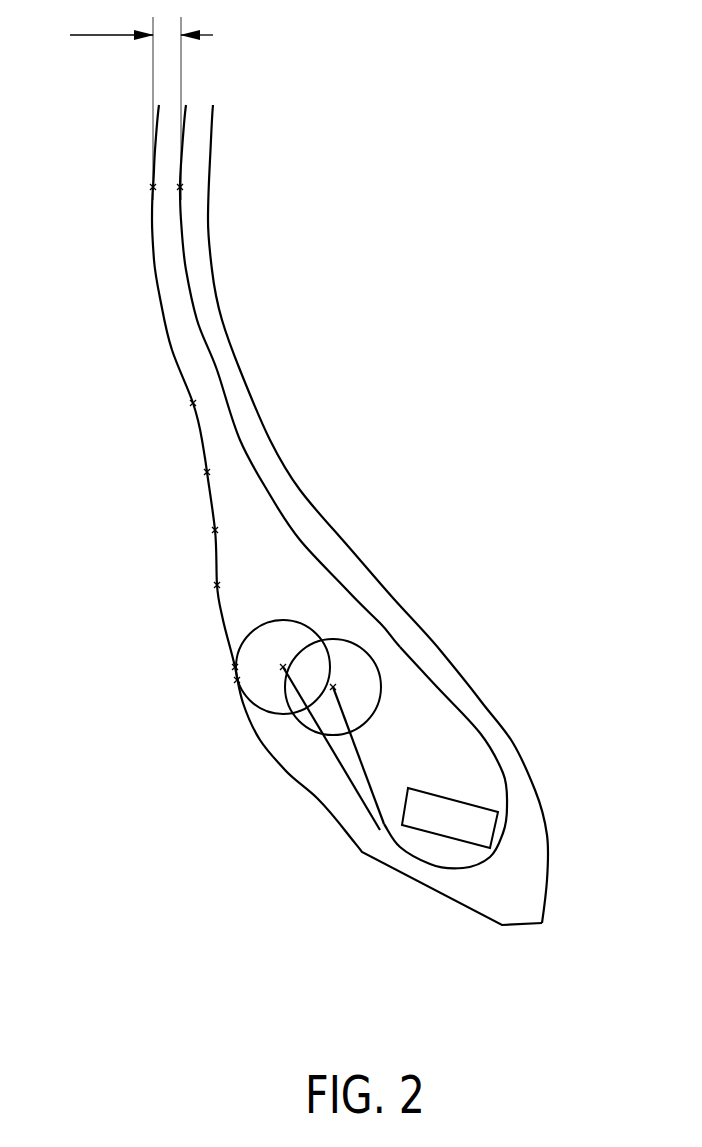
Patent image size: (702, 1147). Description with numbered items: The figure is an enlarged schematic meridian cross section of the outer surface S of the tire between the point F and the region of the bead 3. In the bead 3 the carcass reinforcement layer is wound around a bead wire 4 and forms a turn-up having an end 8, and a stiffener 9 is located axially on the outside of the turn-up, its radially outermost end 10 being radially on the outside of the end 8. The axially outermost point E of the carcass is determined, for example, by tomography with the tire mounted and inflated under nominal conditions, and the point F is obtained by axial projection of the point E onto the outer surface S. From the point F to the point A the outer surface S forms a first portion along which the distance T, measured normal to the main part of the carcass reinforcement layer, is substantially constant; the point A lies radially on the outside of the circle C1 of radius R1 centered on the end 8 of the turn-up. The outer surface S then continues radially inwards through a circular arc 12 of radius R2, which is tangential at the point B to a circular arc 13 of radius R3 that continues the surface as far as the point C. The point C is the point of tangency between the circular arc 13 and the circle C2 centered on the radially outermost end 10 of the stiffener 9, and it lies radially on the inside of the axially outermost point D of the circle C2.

The distance T is at (141, 103).
The point F is at (153, 187).
The axially outermost point of the carcass E is at (181, 187).
The outer surface of the tire S is at (160, 298).
The point A is at (193, 403).
The circular arc 12 is at (207, 472).
The point B is at (215, 530).
The circular arc 13 is at (217, 585).
The axially outermost point of the circle C2 D is at (235, 667).
The point C is at (237, 680).
The circle C2 is at (283, 617).
The circle C1 is at (358, 638).
The radially outermost end of the stiffener 10 is at (283, 667).
The end of the turn-up 8 is at (335, 686).
The stiffener 9 is at (360, 797).
The bead 3 is at (430, 737).
The bead wire 4 is at (485, 808).